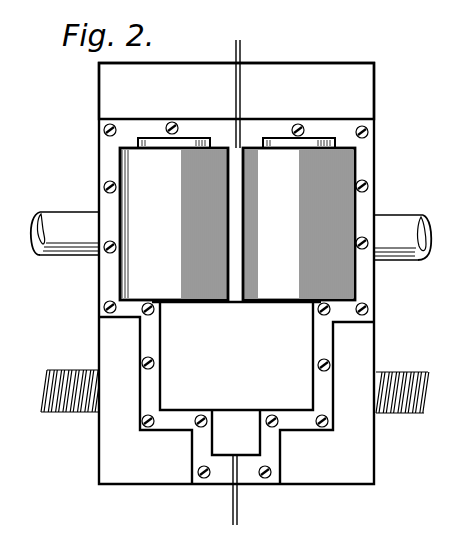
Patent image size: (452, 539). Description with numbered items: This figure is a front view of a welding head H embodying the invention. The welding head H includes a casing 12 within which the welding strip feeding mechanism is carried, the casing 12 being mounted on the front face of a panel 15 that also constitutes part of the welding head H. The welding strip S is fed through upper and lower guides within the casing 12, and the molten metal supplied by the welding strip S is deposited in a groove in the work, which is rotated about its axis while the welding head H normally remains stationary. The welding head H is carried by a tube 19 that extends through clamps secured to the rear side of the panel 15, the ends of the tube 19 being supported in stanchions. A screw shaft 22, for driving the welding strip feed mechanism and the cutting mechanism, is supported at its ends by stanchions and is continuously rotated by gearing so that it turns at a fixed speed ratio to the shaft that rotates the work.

The welding head H is at (99, 78).
The welding strip S is at (243, 47).
The panel 15 is at (360, 68).
The casing 12 is at (120, 282).
The tube 19 is at (392, 222).
The screw shaft 22 is at (398, 414).